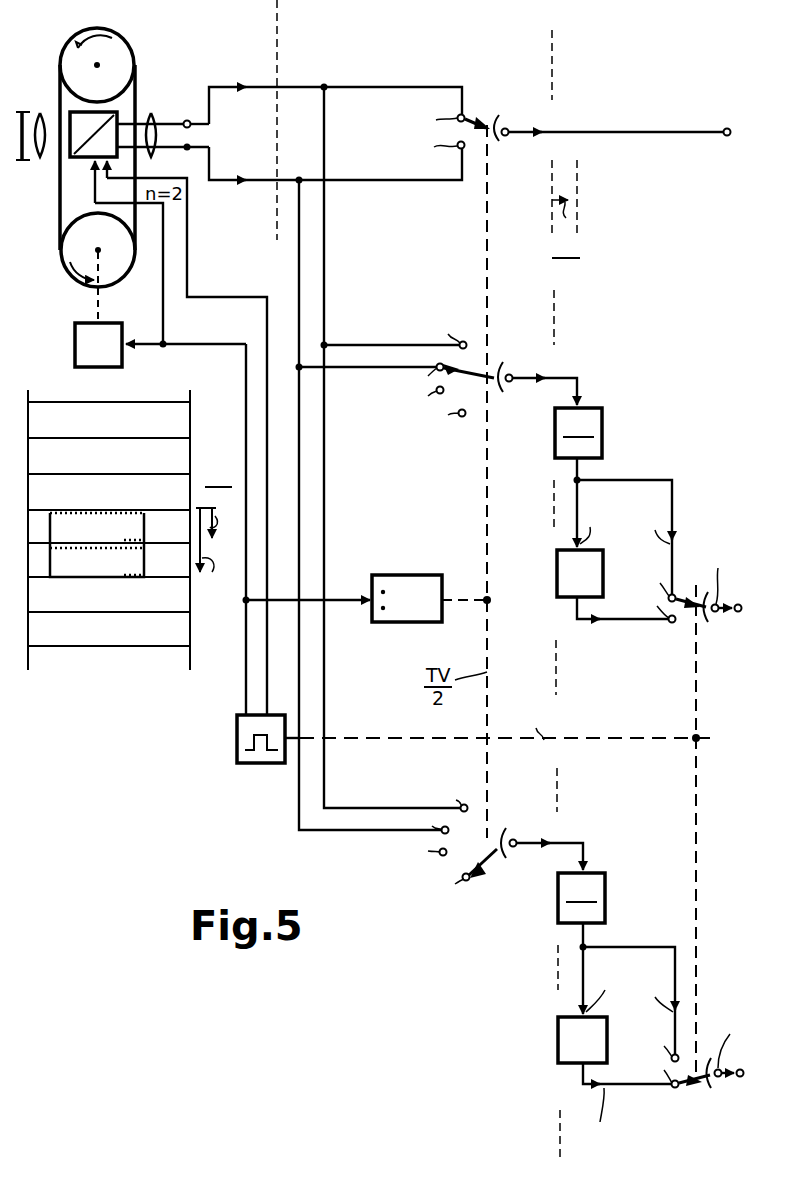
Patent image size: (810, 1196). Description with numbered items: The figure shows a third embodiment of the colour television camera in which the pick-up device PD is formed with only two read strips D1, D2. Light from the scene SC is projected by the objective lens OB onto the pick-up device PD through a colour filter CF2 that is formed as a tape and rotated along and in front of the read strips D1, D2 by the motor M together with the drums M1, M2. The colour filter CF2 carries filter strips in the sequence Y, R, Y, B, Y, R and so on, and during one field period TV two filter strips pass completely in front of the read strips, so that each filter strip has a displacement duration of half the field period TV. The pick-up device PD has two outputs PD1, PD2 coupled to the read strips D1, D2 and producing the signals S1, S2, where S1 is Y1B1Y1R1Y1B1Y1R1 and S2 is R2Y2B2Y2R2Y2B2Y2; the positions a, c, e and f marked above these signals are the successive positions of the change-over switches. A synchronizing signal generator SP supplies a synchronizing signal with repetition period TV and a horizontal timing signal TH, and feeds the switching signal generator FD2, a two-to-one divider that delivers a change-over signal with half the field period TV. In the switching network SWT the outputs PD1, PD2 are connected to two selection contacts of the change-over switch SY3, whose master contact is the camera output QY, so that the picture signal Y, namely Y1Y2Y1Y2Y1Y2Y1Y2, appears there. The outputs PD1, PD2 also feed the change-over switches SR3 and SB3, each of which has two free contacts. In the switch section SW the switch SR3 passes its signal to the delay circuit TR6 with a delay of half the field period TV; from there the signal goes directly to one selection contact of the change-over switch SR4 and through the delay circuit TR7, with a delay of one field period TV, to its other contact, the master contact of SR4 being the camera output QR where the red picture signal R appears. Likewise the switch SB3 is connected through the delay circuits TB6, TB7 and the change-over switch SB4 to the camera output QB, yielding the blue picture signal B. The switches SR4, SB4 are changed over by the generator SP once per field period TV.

The drum M2 is at (121, 52).
The drum M1 is at (118, 276).
The colour filter CF2 is at (54, 224).
The scene SC is at (23, 112).
The objective lens OB is at (42, 158).
The pick-up device PD is at (78, 158).
The pick-up output PD1 is at (186, 121).
The pick-up output PD2 is at (187, 150).
The motor M is at (110, 368).
The read strip D1 is at (66, 522).
The read strip D2 is at (66, 566).
The field period TV is at (246, 650).
The horizontal sync pulse TH is at (268, 662).
The signal S1 is at (247, 86).
The signal S2 is at (247, 182).
The switching network SWT is at (383, 491).
The switch unit SW is at (591, 598).
The change-over switch SY3 is at (494, 138).
The camera output QY is at (727, 136).
The picture signal Y is at (545, 128).
The change-over switch SR3 is at (497, 386).
The picture signal R is at (548, 376).
The delay circuit TR6 is at (555, 460).
The delay circuit TR7 is at (557, 568).
The change-over switch SR4 is at (698, 616).
The camera output QR is at (750, 590).
The switching signal generator FD2 is at (392, 623).
The synchronizing signal generator SP is at (237, 742).
The change-over switch SB3 is at (501, 864).
The picture signal B is at (556, 842).
The delay circuit TB6 is at (558, 918).
The delay circuit TB7 is at (558, 1040).
The change-over switch SB4 is at (708, 1084).
The camera output QB is at (748, 1058).